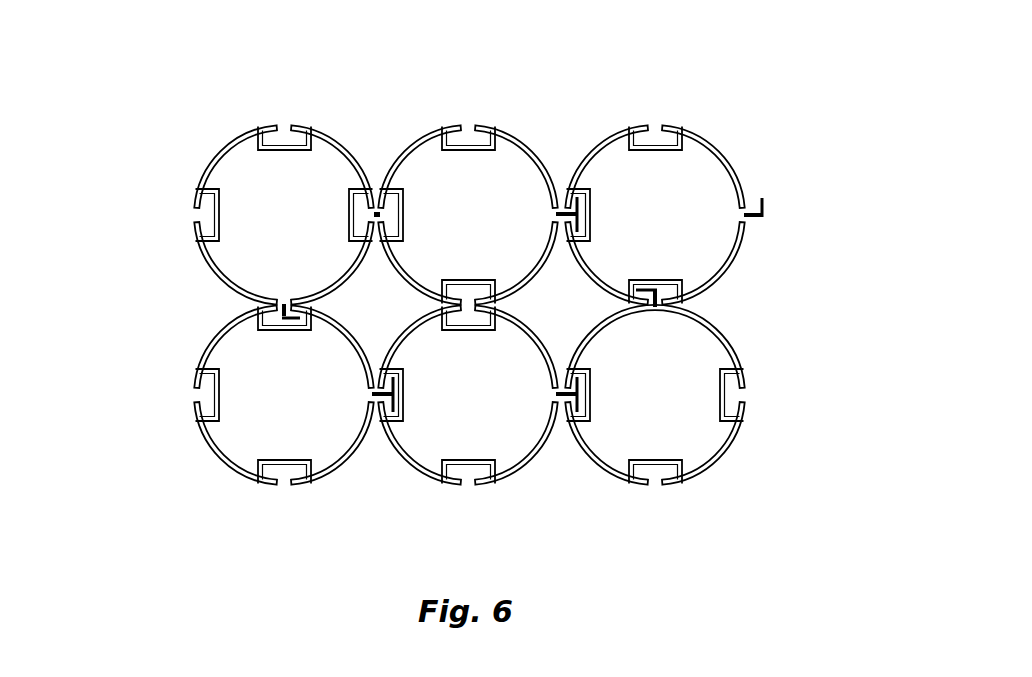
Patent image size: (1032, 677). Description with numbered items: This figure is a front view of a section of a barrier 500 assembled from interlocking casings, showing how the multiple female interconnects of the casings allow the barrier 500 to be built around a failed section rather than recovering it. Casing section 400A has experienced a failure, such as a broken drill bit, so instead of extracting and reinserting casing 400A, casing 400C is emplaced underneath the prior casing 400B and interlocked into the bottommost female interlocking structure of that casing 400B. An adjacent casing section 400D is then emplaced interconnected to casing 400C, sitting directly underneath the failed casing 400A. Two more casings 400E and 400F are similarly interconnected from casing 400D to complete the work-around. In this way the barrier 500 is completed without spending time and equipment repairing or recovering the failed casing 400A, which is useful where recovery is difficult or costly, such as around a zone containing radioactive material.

The casing section 400A is at (539, 124).
The prior casing 400B is at (751, 153).
The casing 400C is at (759, 333).
The adjacent casing section 400D is at (541, 488).
The casing 400E is at (203, 469).
The casing 400F is at (163, 246).
The barrier 500 is at (460, 330).